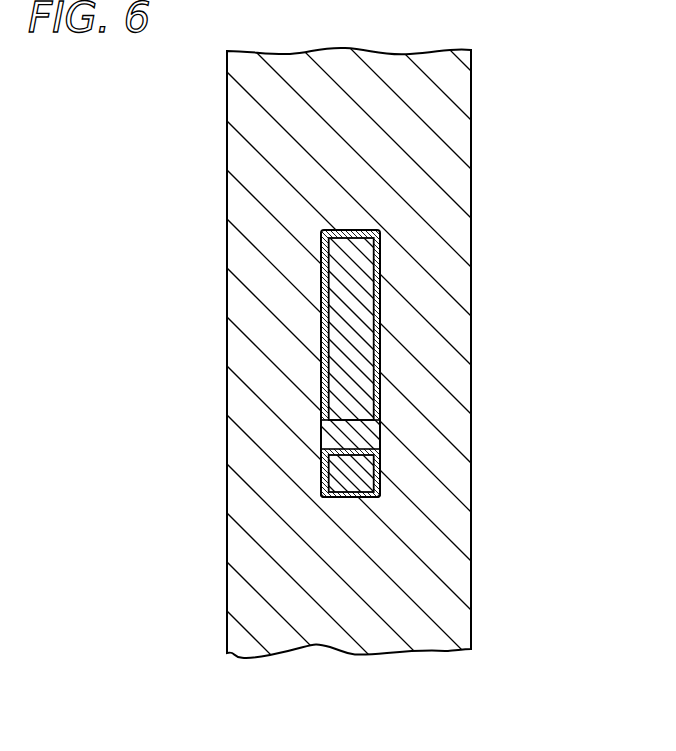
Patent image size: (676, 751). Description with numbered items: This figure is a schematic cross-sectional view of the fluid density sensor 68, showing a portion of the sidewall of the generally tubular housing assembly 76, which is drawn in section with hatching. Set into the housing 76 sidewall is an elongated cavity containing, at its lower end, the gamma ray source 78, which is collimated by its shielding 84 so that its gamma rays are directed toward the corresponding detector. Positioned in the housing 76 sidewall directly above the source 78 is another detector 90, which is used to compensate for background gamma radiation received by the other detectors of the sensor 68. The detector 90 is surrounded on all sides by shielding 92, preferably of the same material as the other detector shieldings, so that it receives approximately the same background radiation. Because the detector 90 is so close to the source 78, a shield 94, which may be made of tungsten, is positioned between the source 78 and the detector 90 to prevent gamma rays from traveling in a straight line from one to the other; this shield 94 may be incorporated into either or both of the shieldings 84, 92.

The fluid density sensor 68 is at (559, 70).
The housing assembly 76 is at (471, 563).
The source 78 is at (375, 472).
The shielding 84 is at (340, 497).
The detector 90 is at (363, 270).
The shielding 92 is at (321, 410).
The shield 94 is at (378, 434).